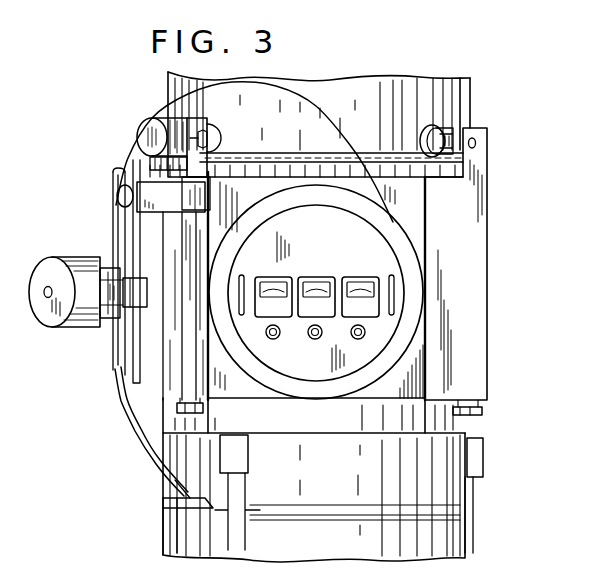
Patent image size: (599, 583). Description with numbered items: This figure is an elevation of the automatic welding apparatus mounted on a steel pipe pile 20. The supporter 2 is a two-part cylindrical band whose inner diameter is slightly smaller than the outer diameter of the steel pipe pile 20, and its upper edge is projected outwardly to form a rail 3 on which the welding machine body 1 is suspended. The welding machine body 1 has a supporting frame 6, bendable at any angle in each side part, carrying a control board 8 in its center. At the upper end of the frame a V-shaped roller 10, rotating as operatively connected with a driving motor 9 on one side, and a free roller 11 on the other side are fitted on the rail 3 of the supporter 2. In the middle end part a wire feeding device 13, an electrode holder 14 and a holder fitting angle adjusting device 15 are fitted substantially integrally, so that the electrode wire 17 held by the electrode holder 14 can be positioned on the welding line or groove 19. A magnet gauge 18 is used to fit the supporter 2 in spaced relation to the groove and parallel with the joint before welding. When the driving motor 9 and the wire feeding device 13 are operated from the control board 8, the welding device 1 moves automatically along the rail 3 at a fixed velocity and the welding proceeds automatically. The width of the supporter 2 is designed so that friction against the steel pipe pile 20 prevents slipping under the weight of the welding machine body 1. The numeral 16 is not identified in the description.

The welding machine body 1 is at (87, 218).
The supporter 2 is at (347, 427).
The rail 3 is at (283, 162).
The supporting frame 6 is at (473, 237).
The control board 8 is at (378, 343).
The driving motor 9 is at (162, 120).
The V-shaped roller 10 is at (218, 136).
The free roller 11 is at (420, 140).
The wire feeding device 13 is at (82, 256).
The electrode holder 14 is at (127, 395).
The holder fitting angle adjusting device 15 is at (96, 325).
The clip 16 is at (205, 410).
The electrode wire 17 is at (333, 130).
The magnet gauge 18 is at (248, 455).
The welding line or groove 19 is at (165, 505).
The steel pipe pile 20 is at (465, 93).